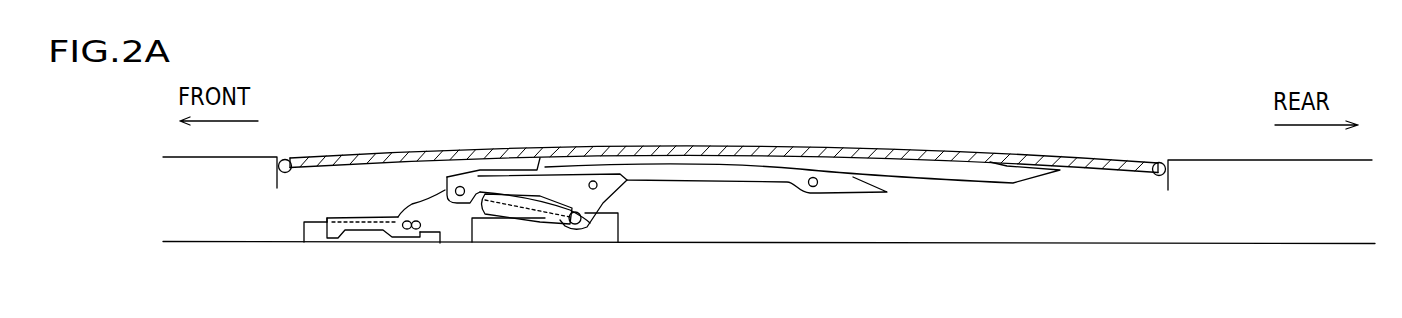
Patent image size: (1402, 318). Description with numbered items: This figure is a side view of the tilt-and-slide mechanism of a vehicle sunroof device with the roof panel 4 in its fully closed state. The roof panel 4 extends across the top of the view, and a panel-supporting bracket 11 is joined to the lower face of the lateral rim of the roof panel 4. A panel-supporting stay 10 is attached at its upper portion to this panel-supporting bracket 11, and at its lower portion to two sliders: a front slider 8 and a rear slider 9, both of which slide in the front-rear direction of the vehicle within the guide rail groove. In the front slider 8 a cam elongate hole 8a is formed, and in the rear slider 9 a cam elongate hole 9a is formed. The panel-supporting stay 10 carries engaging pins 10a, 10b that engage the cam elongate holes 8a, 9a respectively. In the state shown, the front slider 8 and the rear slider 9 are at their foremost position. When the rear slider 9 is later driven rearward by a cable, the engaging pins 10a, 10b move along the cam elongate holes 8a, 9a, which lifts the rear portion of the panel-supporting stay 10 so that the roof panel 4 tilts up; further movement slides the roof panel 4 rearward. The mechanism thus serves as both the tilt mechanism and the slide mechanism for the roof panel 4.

The roof panel 4 is at (810, 150).
The front slider 8 is at (353, 243).
The cam elongate hole 8a is at (427, 217).
The rear slider 9 is at (608, 235).
The cam elongate hole 9a is at (517, 218).
The panel-supporting stay 10 is at (695, 173).
The engaging pin 10a is at (397, 241).
The engaging pin 10b is at (575, 225).
The panel-supporting bracket 11 is at (947, 172).